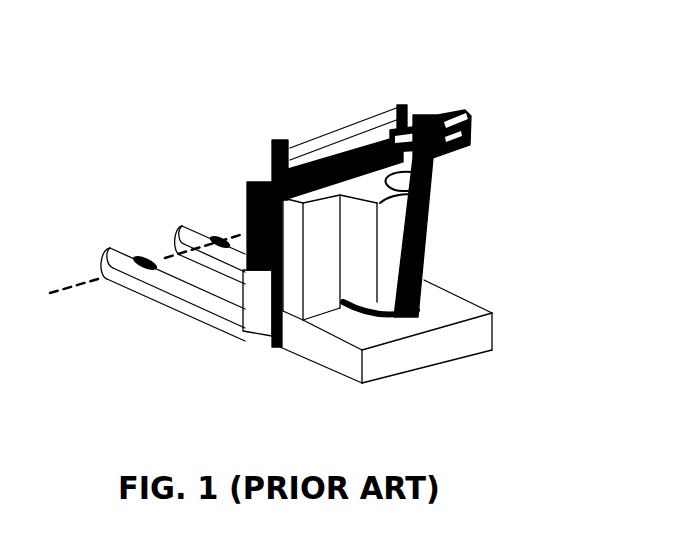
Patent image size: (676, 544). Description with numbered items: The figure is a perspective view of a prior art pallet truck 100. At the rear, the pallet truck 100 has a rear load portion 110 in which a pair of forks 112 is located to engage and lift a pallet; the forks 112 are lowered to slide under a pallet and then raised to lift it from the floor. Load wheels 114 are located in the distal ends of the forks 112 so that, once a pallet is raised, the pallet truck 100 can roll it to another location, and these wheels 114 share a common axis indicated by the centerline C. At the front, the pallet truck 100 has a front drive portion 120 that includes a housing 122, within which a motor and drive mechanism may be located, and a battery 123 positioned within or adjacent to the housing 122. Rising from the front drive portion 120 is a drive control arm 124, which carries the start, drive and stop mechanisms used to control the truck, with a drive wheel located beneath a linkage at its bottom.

The pallet truck 100 is at (520, 93).
The rear load portion 110 is at (225, 340).
The forks 112 is at (172, 221).
The load wheels 114 is at (221, 218).
The front drive portion 120 is at (349, 390).
The housing 122 is at (320, 263).
The battery 123 is at (245, 302).
The drive control arm 124 is at (456, 167).